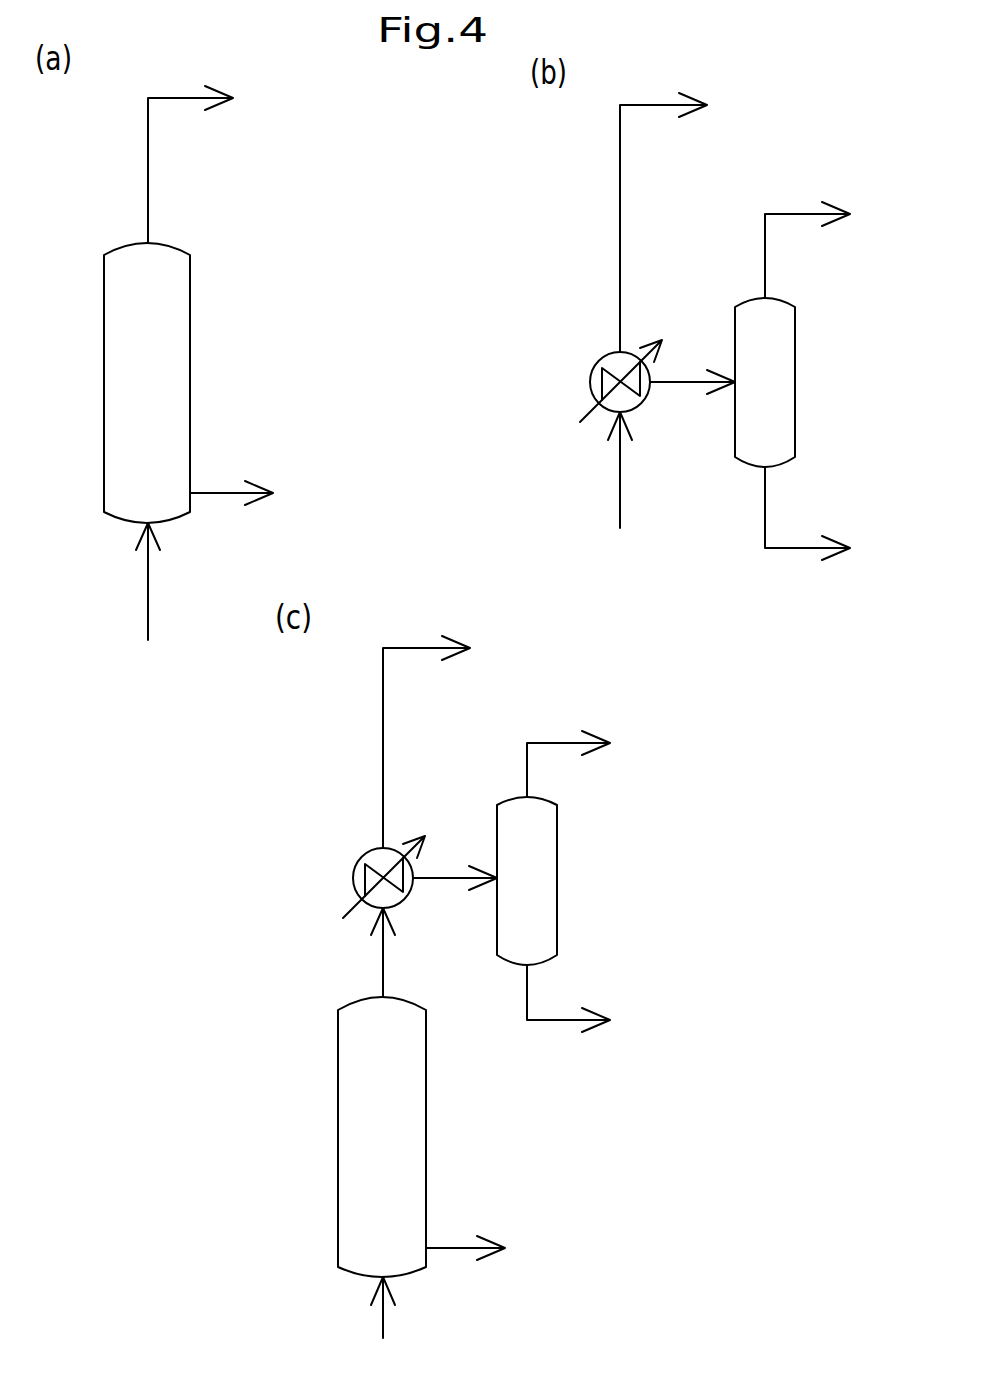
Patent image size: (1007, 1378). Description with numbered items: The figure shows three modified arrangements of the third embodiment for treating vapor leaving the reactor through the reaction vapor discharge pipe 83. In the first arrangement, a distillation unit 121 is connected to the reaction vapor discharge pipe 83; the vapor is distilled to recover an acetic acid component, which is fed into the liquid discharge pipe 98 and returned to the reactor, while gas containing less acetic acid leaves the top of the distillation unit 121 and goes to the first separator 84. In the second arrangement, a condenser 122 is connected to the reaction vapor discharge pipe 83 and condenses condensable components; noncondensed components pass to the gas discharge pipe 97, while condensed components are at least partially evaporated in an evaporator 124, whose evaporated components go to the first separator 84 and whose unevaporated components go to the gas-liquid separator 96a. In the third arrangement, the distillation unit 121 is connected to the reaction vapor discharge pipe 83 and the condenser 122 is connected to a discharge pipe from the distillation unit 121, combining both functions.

The distillation unit 121 is at (172, 378).
The evaporator 124 is at (780, 377).
The condenser 122 is at (605, 365).
The reaction vapor discharge pipe 83 is at (381, 895).
The first separator 84 is at (520, 439).
The gas discharge pipe 97 is at (565, 467).
The liquid discharge pipe 98 is at (365, 871).
The gas-liquid separator 96a is at (714, 753).